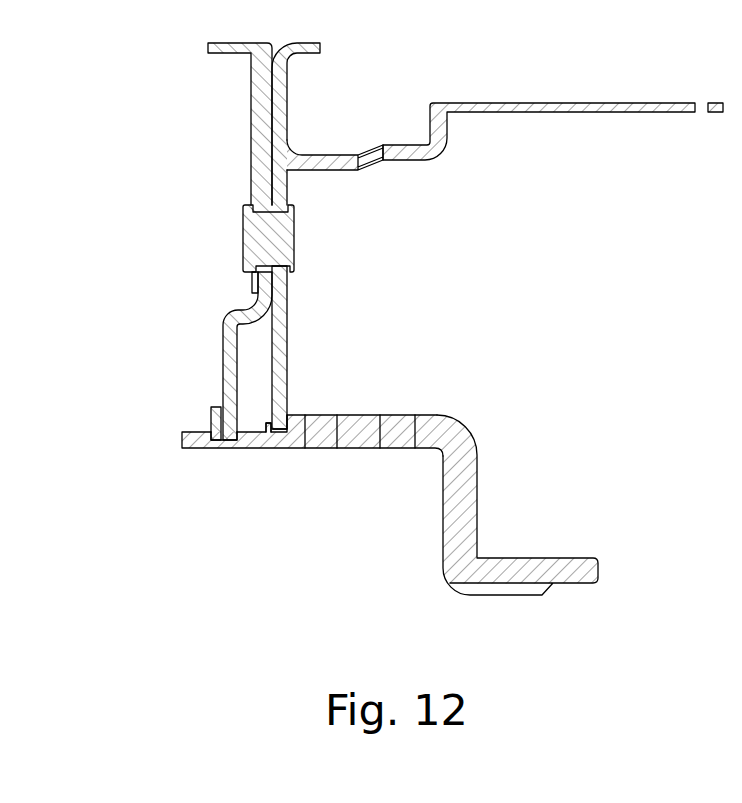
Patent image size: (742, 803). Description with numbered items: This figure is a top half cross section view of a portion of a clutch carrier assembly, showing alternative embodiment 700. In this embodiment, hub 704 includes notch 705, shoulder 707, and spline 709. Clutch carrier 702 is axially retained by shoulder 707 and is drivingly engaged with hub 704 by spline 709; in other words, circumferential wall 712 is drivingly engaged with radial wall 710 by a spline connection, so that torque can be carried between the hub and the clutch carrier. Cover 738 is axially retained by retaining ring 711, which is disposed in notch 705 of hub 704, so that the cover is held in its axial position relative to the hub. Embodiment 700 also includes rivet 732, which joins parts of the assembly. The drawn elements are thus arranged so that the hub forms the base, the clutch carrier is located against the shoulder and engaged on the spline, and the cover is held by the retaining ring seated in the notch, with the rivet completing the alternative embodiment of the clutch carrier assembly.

The alternative embodiment 700 is at (378, 82).
The clutch carrier 702 is at (283, 186).
The hub 704 is at (465, 483).
The notch 705 is at (207, 411).
The shoulder 707 is at (293, 413).
The spline 709 is at (281, 438).
The radial wall 710 is at (285, 288).
The retaining ring 711 is at (215, 449).
The circumferential wall 712 is at (355, 430).
The rivet 732 is at (290, 232).
The cover 738 is at (228, 342).